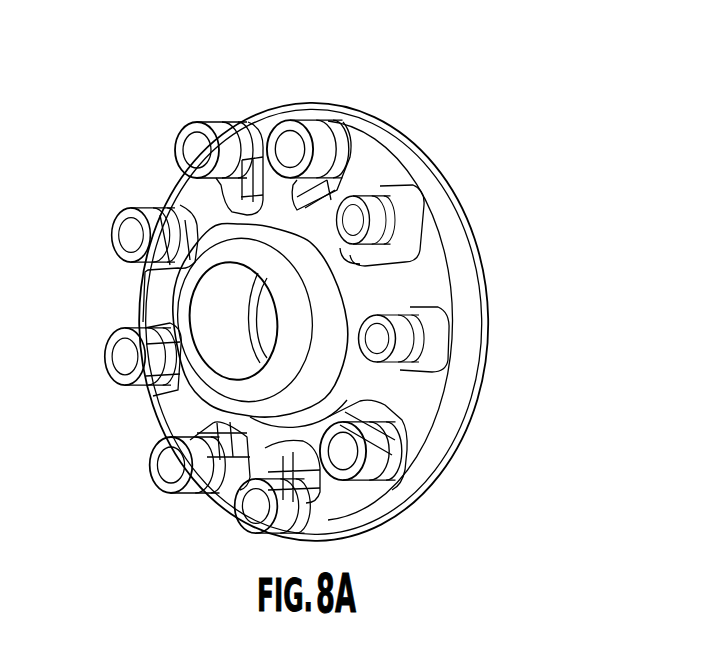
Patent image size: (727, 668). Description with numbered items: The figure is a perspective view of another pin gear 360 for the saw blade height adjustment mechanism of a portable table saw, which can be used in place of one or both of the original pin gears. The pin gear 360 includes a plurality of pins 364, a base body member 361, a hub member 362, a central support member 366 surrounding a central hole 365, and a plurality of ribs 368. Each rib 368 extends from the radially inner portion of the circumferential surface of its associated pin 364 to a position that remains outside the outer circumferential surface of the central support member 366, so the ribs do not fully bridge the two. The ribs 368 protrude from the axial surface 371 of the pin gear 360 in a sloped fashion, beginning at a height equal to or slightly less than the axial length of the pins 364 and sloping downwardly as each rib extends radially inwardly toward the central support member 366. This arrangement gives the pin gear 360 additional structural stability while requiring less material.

The pin gear 360 is at (360, 60).
The base body member 361 is at (407, 155).
The hub member 362 is at (483, 307).
The pins 364 is at (407, 213).
The central hole 365 is at (203, 343).
The central support member 366 is at (174, 306).
The ribs 368 is at (247, 177).
The axial surface 371 is at (410, 413).